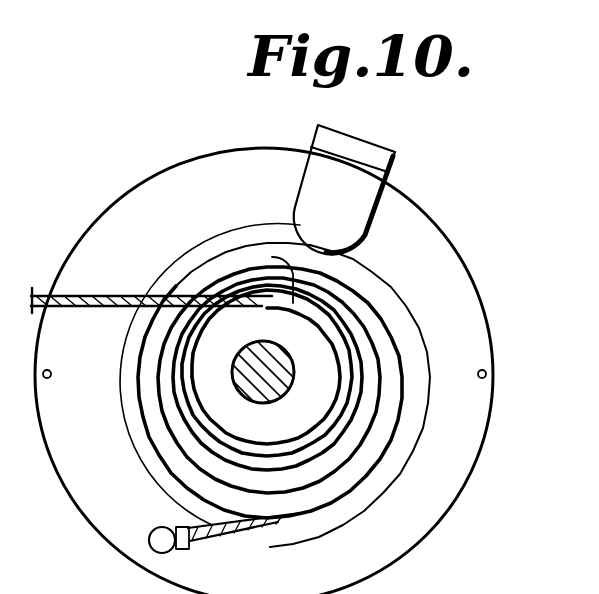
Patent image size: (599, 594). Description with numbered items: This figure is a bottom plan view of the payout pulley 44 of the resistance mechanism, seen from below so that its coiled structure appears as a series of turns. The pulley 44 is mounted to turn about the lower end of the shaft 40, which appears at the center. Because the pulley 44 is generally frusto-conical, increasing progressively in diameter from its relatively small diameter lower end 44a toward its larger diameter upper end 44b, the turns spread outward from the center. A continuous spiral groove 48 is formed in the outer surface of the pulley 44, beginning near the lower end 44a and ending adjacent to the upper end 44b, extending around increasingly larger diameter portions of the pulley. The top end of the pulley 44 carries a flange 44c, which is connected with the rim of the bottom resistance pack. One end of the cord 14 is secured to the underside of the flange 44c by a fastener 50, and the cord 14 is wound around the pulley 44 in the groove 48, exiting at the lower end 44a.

The cord 14 is at (93, 296).
The shaft 40 is at (272, 350).
The payout pulley 44 is at (218, 229).
The lower end 44a is at (304, 424).
The upper end 44b is at (386, 490).
The flange 44c is at (458, 263).
The spiral groove 48 is at (267, 273).
The fastener 50 is at (162, 528).